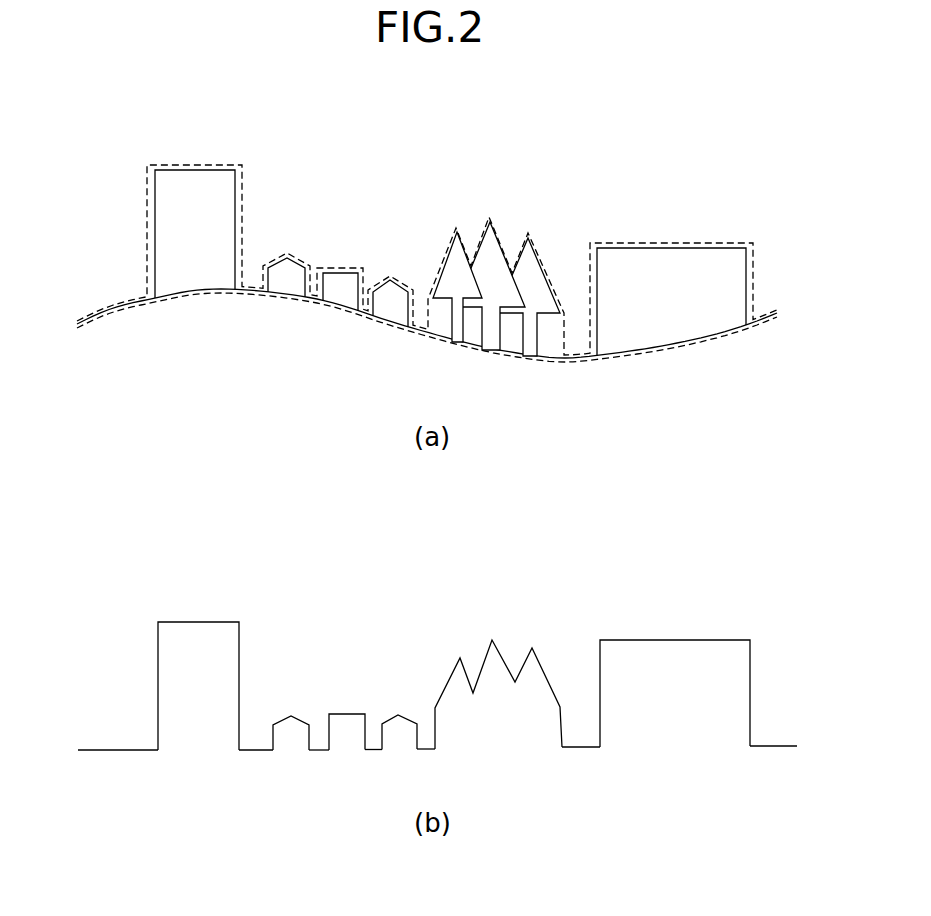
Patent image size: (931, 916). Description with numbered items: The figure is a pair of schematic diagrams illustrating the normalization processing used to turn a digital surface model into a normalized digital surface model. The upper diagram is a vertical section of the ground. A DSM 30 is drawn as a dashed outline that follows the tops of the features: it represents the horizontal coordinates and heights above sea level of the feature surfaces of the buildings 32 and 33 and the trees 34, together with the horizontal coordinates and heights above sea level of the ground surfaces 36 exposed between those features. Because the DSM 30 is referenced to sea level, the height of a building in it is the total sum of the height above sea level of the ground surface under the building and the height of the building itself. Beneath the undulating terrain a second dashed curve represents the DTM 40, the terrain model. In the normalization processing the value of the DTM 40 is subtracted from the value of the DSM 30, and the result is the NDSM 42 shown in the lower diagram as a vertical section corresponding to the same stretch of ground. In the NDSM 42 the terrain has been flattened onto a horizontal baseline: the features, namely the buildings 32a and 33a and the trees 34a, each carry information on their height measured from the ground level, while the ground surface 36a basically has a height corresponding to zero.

The DSM 30 is at (760, 310).
The building 32 is at (198, 170).
The building 33 is at (300, 262).
The trees 34 is at (500, 247).
The ground surface 36 is at (105, 312).
The DTM 40 is at (740, 338).
The building 32a is at (202, 621).
The building 33a is at (303, 716).
The trees 34a is at (505, 660).
The ground surface 36a is at (108, 749).
The NDSM 42 is at (773, 743).